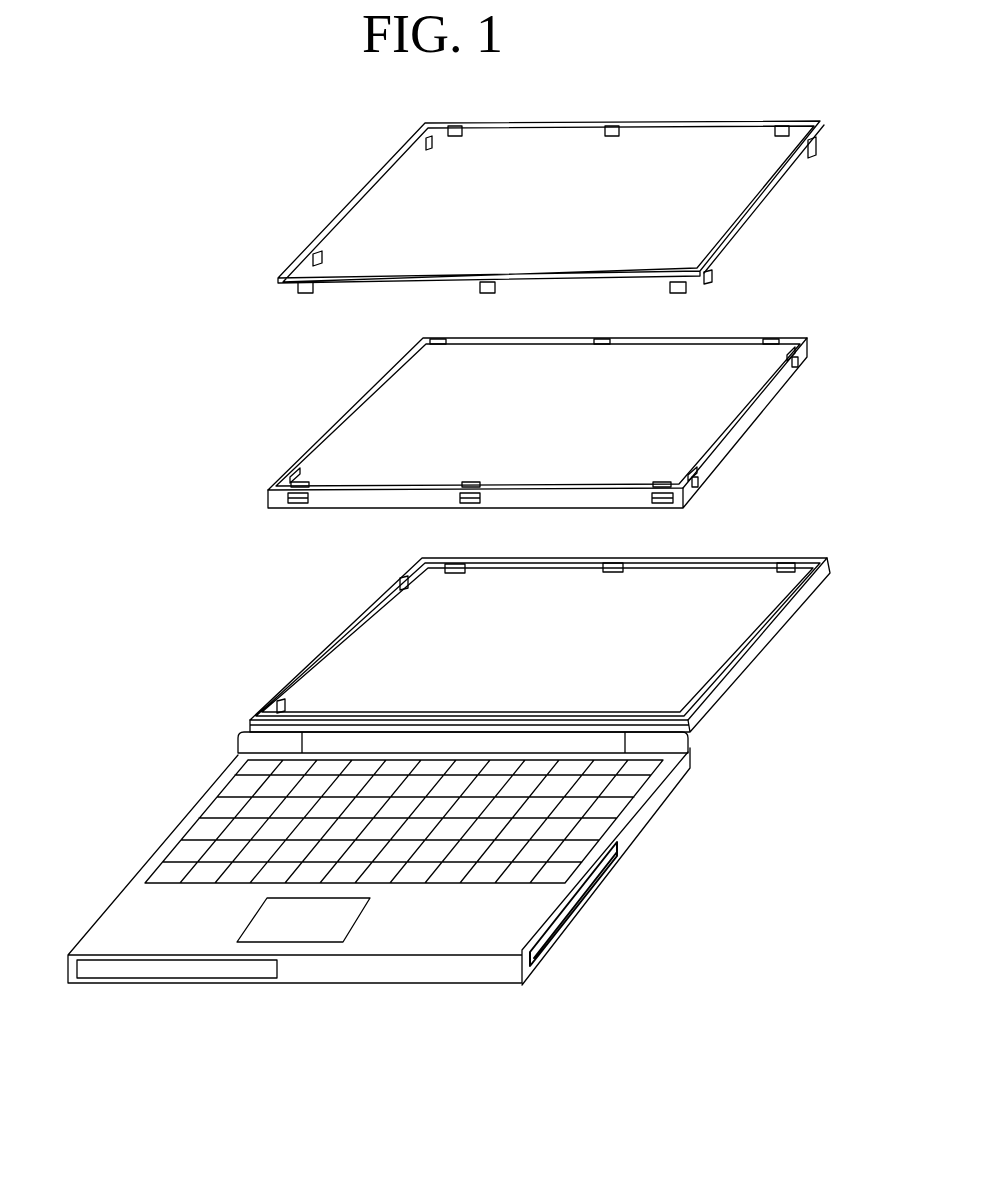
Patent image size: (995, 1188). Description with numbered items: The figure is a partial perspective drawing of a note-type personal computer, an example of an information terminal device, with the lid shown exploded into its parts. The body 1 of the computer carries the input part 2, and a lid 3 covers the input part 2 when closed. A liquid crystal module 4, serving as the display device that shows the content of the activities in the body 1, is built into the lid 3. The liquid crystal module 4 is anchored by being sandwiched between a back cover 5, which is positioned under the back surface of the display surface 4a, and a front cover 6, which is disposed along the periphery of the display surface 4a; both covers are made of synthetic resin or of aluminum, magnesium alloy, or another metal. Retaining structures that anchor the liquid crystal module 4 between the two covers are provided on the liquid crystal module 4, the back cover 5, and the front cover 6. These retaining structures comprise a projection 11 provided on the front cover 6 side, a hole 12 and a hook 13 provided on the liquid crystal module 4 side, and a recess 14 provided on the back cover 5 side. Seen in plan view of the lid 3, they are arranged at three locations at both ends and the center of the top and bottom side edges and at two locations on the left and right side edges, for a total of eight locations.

The body 1 is at (120, 895).
The input part 2 is at (215, 810).
The lid 3 is at (180, 500).
The liquid crystal module 4 is at (300, 470).
The display surface 4a is at (408, 410).
The back cover 5 is at (340, 640).
The front cover 6 is at (340, 290).
The projection 11 is at (455, 137).
The hole 12 is at (438, 339).
The hook 13 is at (796, 367).
The recess 14 is at (455, 564).